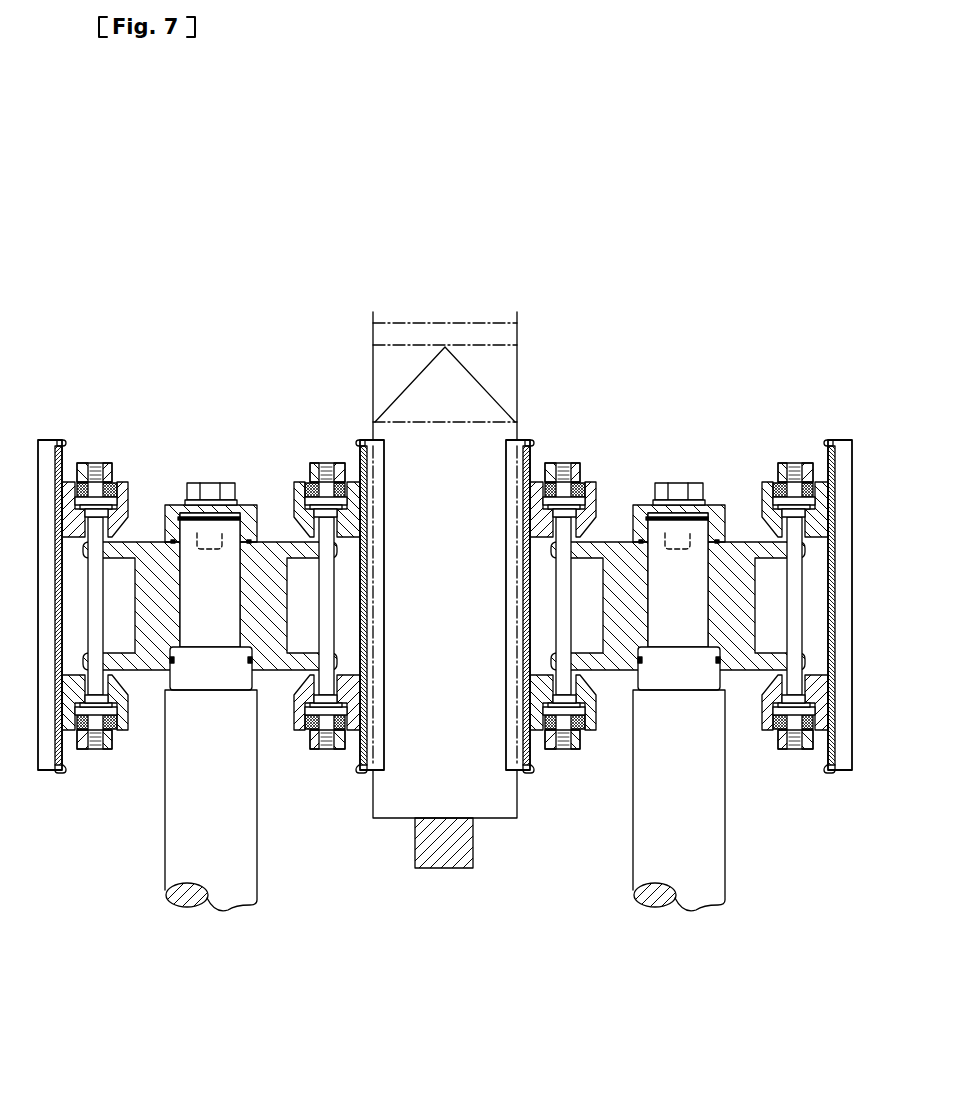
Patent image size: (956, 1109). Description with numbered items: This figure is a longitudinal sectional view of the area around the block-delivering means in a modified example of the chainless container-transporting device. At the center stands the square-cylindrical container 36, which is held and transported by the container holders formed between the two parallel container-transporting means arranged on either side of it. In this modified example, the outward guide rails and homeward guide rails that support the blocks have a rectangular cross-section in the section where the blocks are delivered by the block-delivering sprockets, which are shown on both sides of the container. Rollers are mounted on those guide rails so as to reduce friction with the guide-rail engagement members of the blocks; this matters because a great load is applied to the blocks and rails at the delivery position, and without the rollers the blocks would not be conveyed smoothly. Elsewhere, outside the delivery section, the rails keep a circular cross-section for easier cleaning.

The square-cylindrical container 36 is at (440, 320).